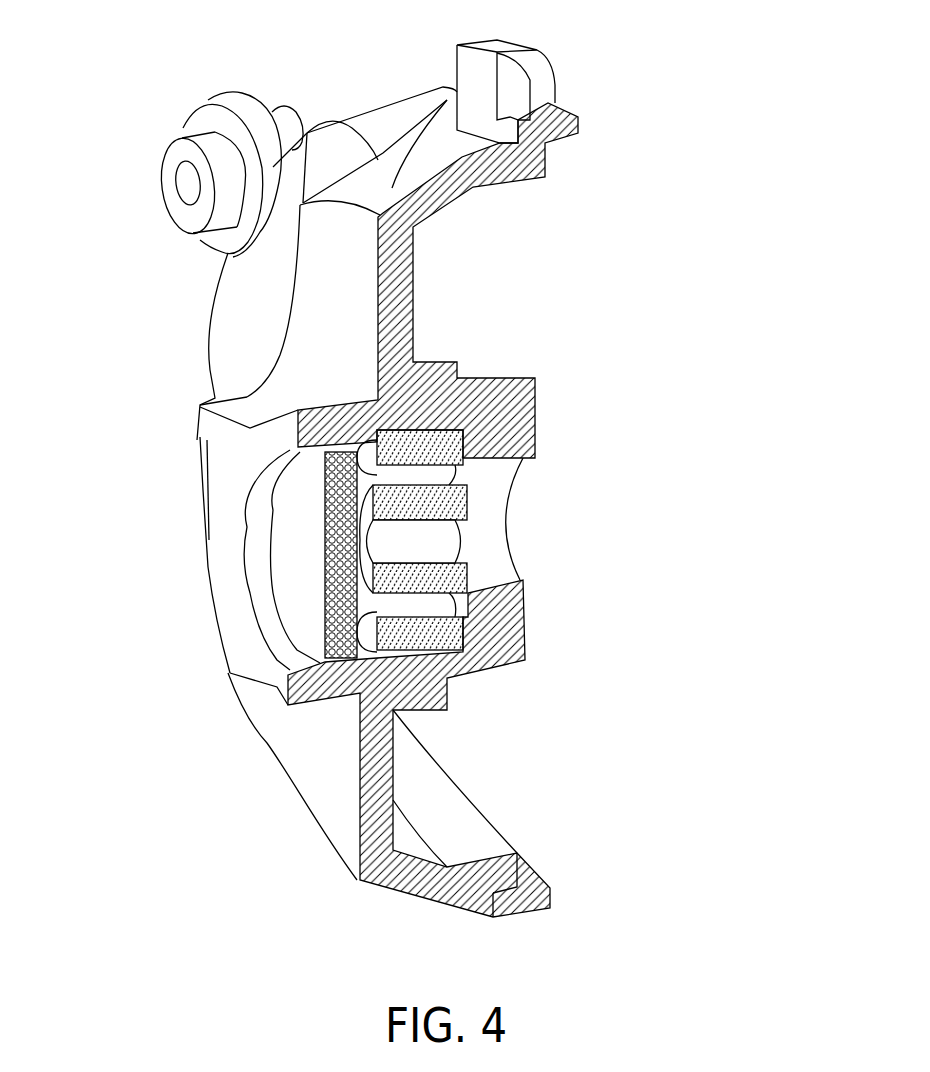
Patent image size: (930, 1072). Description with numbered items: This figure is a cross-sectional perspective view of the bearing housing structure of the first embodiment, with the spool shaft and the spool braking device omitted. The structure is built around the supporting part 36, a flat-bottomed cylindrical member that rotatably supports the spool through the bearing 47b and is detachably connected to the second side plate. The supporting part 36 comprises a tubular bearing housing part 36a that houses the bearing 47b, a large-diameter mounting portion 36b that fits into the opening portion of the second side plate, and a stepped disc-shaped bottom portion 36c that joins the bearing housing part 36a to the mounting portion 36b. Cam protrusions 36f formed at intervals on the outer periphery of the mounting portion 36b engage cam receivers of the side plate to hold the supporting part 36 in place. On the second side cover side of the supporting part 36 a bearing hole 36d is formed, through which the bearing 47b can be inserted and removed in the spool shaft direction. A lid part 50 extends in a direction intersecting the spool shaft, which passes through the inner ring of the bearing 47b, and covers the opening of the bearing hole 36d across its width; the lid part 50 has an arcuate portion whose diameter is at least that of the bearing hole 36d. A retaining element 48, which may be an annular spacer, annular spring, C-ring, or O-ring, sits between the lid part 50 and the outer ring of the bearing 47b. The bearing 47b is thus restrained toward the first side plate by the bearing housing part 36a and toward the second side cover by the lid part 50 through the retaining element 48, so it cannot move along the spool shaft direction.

The supporting part 36 is at (186, 314).
The bearing housing part 36a is at (447, 356).
The mounting portion 36b is at (455, 133).
The bottom portion 36c is at (307, 760).
The bearing hole 36d is at (260, 525).
The cam protrusion 36f is at (545, 73).
The bearing 47b is at (505, 497).
The retaining element 48 is at (420, 705).
The lid part 50 is at (312, 598).